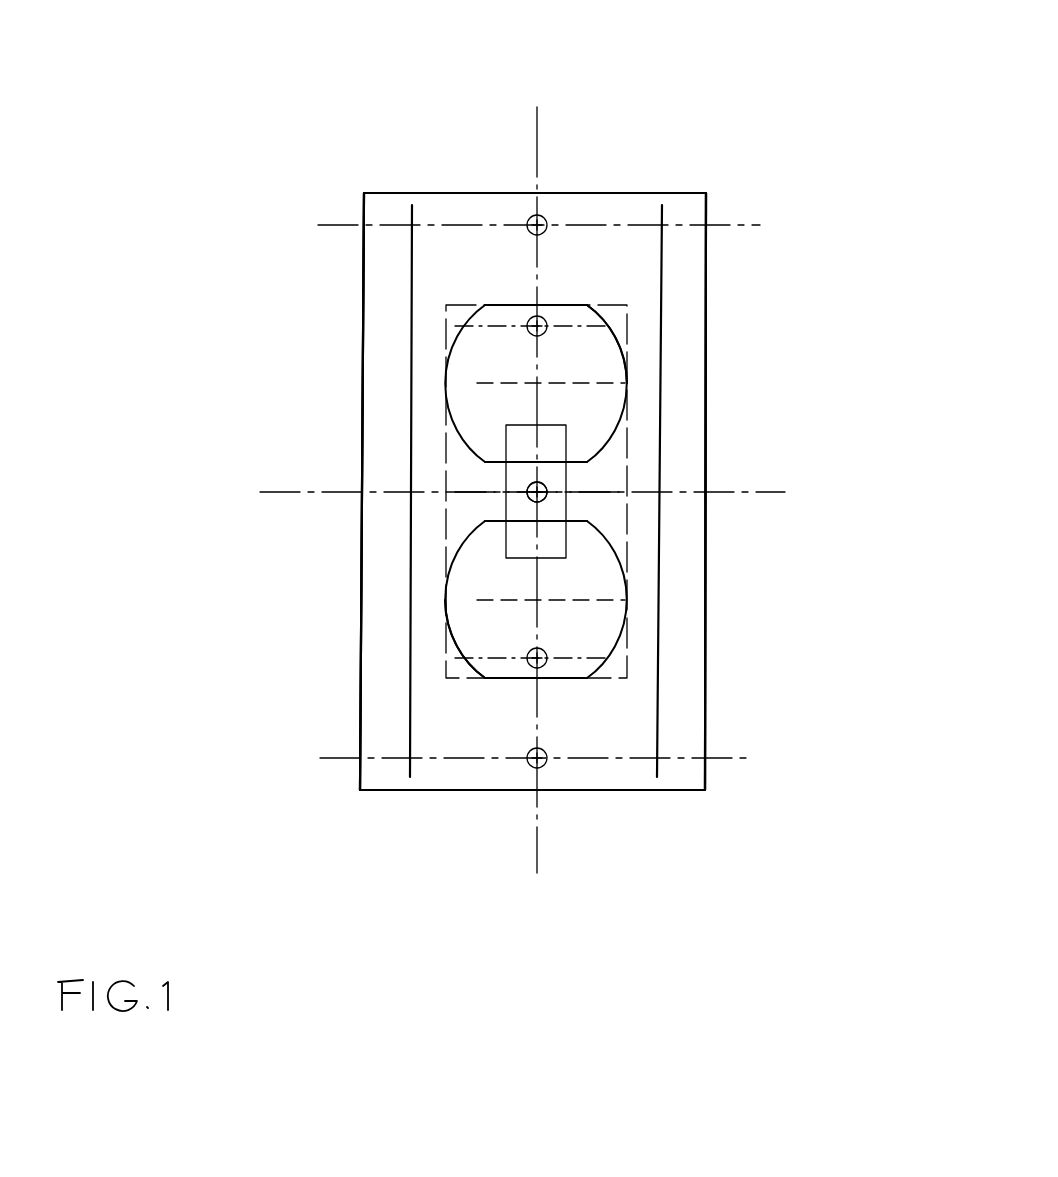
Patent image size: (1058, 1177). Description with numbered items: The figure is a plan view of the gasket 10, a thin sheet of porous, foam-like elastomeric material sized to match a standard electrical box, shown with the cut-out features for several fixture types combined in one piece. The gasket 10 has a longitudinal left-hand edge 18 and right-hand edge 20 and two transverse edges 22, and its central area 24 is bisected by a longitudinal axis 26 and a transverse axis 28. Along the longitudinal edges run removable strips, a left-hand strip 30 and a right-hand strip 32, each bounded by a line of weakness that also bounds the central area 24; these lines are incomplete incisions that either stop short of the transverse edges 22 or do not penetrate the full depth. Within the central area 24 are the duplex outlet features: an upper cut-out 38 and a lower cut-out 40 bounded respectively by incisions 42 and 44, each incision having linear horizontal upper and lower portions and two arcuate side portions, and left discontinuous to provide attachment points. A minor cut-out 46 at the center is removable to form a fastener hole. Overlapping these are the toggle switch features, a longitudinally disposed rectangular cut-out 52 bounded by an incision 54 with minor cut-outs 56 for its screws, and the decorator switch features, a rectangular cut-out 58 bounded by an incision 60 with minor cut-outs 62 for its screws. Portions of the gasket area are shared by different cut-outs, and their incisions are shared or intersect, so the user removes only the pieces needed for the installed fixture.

The gasket 10 is at (268, 392).
The left-hand edge 18 is at (288, 491).
The right-hand edge 20 is at (775, 491).
The transverse edges 22 is at (502, 484).
The central area 24 is at (507, 390).
The longitudinal axis 26 is at (495, 451).
The transverse axis 28 is at (567, 545).
The left-hand strip 30 is at (297, 491).
The right-hand strip 32 is at (746, 491).
The upper cut-out 38 is at (378, 317).
The lower cut-out 40 is at (337, 571).
The incision 42 is at (706, 319).
The incision 44 is at (367, 667).
The minor cut-out 46 is at (678, 471).
The rectangular cut-out 52 is at (676, 563).
The incision 54 is at (379, 466).
The minor cut-outs 56 is at (656, 494).
The rectangular cut-out 58 is at (702, 449).
The incision 60 is at (673, 454).
The minor cut-outs 62 is at (622, 512).